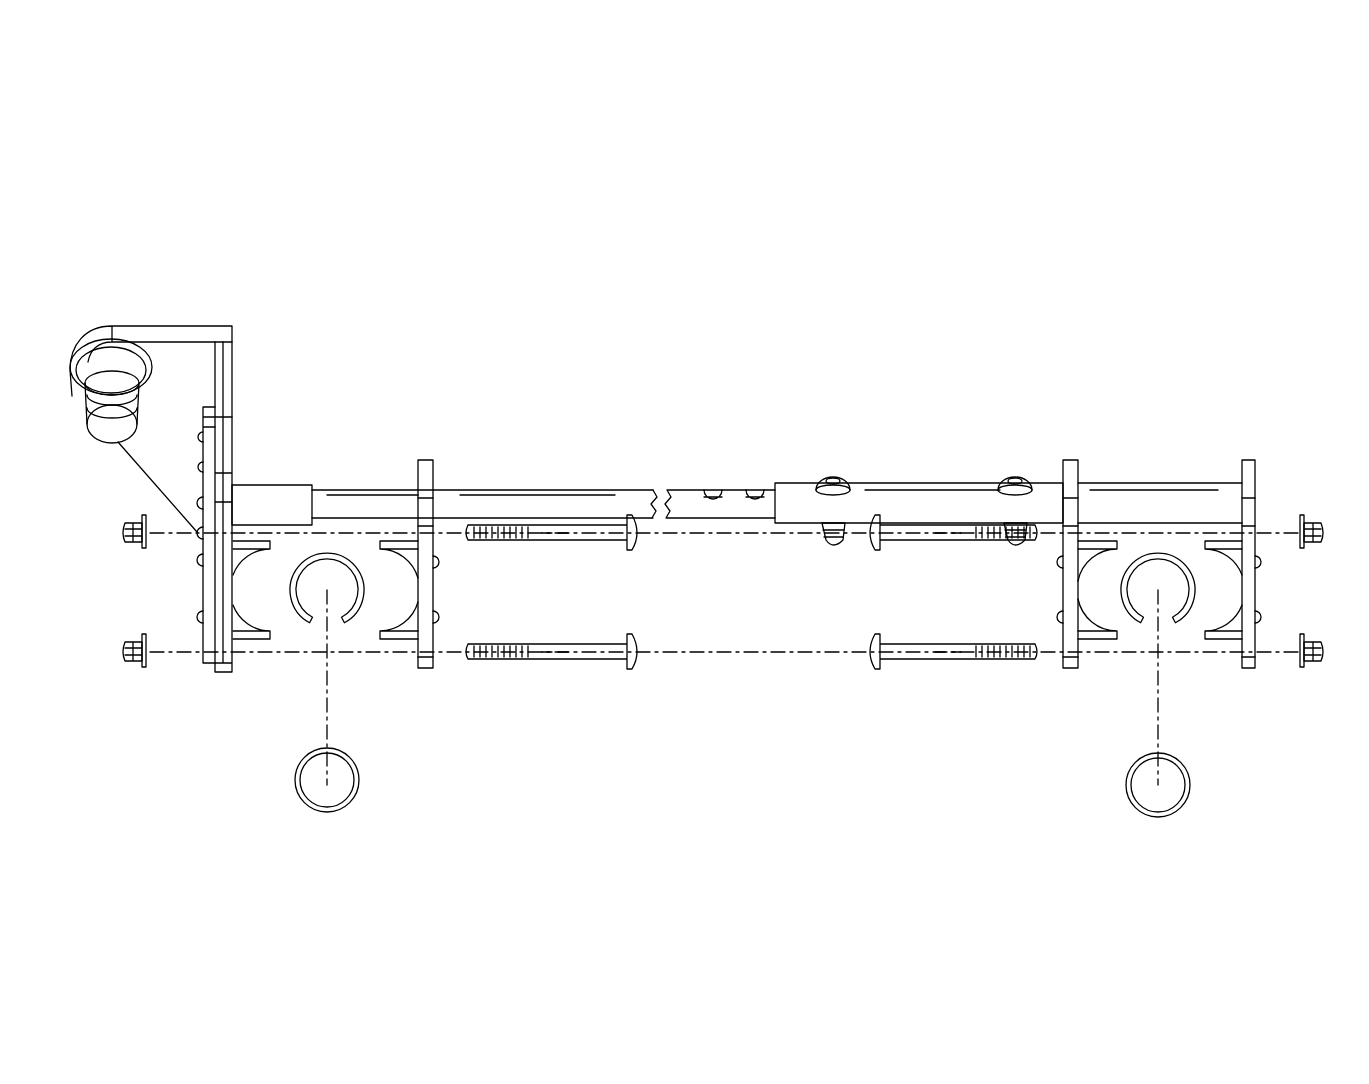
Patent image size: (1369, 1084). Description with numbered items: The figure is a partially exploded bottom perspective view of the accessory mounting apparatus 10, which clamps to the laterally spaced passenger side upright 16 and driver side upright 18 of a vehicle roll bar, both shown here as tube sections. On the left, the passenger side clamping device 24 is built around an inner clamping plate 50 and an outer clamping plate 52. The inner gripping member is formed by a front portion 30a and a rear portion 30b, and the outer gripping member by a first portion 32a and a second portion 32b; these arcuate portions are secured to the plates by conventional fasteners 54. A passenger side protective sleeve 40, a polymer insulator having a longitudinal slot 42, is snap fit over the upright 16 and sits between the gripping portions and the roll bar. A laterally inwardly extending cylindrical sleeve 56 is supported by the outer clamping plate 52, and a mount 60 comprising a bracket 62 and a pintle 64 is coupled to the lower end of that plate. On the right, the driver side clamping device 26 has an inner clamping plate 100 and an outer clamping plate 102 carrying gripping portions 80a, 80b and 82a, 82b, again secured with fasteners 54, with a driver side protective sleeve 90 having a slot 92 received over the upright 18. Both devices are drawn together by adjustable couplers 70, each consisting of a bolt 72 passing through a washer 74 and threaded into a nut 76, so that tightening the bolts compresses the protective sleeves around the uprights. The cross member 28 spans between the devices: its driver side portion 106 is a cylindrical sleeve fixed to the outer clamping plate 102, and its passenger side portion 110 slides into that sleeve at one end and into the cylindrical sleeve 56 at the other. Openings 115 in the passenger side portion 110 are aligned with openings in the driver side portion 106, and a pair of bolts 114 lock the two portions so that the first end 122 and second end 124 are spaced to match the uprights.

The accessory mounting apparatus 10 is at (912, 197).
The passenger side upright 16 is at (327, 813).
The driver side upright 18 is at (1158, 818).
The passenger side clamping device 24 is at (417, 307).
The driver side clamping device 26 is at (1196, 332).
The cross member 28 is at (725, 467).
The front portion of first gripping member 30a is at (400, 641).
The rear portion of first gripping member 30b is at (406, 541).
The first portion of second gripping member 32a is at (248, 641).
The second portion of second gripping member 32b is at (250, 553).
The passenger side protective sleeve 40 is at (350, 552).
The slot 42 is at (334, 628).
The inner clamping plate 50 is at (425, 460).
The outer clamping plate 52 is at (223, 674).
The fasteners 54 is at (203, 617).
The cylindrical sleeve 56 is at (290, 490).
The mount 60 is at (175, 294).
The bracket 62 is at (137, 328).
The pintle 64 is at (108, 433).
The adjustable couplers 70 is at (643, 549).
The bolt 72 is at (603, 542).
The washer 74 is at (126, 545).
The nut 76 is at (143, 514).
The front portion of first gripping member 80a is at (1092, 641).
The rear portion of first gripping member 80b is at (1092, 541).
The first portion of second gripping member 82a is at (1225, 641).
The second portion of second gripping member 82b is at (1225, 541).
The driver side protective sleeve 90 is at (1168, 553).
The slot 92 is at (1165, 628).
The inner clamping plate 100 is at (1072, 460).
The outer clamping plate 102 is at (1250, 460).
The driver side portion of cross member 106 is at (933, 488).
The passenger side portion of cross member 110 is at (565, 492).
The bolts 114 is at (833, 475).
The openings 115 is at (755, 500).
The first end 122 is at (1150, 364).
The second end 124 is at (330, 405).